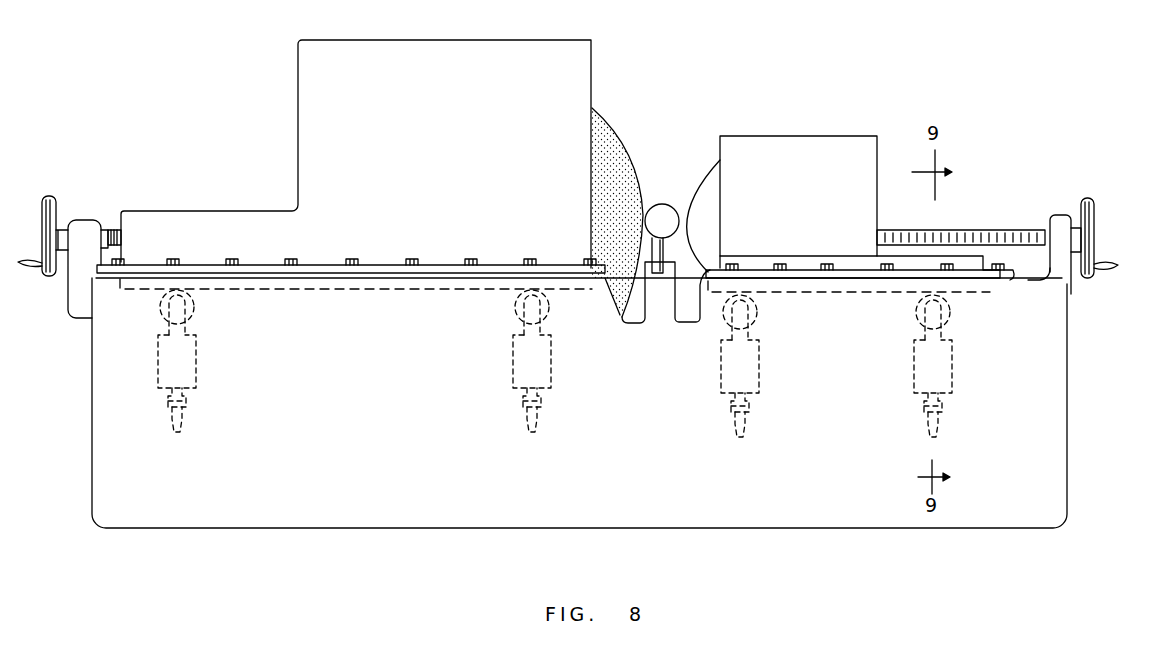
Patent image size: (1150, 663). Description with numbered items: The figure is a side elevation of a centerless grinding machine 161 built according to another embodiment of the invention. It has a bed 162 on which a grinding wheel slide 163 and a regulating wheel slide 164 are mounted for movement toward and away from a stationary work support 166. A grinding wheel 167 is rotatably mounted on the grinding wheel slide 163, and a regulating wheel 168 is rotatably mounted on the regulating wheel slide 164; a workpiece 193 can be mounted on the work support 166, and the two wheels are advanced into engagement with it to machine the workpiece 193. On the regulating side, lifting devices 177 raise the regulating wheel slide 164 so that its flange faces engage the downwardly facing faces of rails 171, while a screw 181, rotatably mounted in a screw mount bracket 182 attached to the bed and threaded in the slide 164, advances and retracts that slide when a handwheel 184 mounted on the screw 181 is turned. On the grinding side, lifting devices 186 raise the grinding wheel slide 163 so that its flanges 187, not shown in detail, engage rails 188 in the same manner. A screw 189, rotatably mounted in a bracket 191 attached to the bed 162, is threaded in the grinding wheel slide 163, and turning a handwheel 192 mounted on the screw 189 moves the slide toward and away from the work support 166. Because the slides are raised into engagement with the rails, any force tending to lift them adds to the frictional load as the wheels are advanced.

The centerless grinding machine 161 is at (752, 559).
The bed 162 is at (805, 528).
The grinding wheel slide 163 is at (298, 106).
The regulating wheel slide 164 is at (982, 270).
The work support 166 is at (657, 277).
The grinding wheel 167 is at (602, 130).
The regulating wheel 168 is at (712, 162).
The rails 171 is at (845, 268).
The lifting devices 177 is at (745, 366).
The screw 181 is at (900, 232).
The screw mount bracket 182 is at (1060, 215).
The handwheel 184 is at (1094, 240).
The lifting devices 186 is at (178, 362).
The flanges 187 is at (355, 290).
The rails 188 is at (376, 266).
The screw 189 is at (114, 229).
The bracket 191 is at (80, 300).
The handwheel 192 is at (54, 196).
The workpiece 193 is at (661, 213).